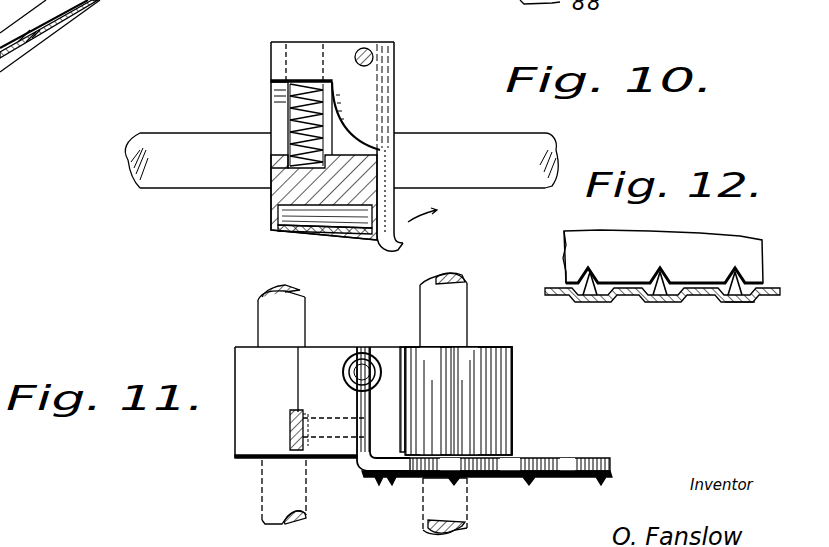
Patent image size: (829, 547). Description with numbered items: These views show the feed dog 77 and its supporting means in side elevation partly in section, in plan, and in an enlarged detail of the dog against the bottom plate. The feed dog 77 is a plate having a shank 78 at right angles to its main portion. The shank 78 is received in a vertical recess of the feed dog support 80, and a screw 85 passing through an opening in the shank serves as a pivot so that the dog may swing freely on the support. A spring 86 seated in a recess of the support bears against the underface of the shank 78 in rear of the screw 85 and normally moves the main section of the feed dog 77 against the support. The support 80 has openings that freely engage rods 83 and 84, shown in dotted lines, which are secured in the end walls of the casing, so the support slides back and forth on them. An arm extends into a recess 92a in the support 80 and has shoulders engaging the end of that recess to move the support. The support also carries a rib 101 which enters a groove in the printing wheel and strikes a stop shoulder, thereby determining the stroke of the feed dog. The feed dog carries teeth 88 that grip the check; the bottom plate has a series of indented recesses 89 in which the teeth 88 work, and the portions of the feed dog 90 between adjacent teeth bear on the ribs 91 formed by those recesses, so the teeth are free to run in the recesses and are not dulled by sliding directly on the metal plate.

In FIG. 10, the feed dog 77 is at (397, 168).
In FIG. 12, the feed dog 77 is at (663, 256).
In FIG. 11, the feed dog 77 is at (552, 466).
In FIG. 10, the shank 78 is at (332, 138).
In FIG. 11, the shank 78 is at (355, 402).
In FIG. 11, the feed dog support 80 is at (313, 365).
In FIG. 11, the rod 83 is at (466, 520).
In FIG. 10, the rod 84 is at (448, 126).
In FIG. 11, the rod 84 is at (268, 503).
In FIG. 10, the screw 85 is at (372, 50).
In FIG. 11, the screw 85 is at (292, 425).
In FIG. 10, the spring 86 is at (284, 96).
In FIG. 11, the spring 86 is at (378, 360).
In FIG. 12, the teeth 88 is at (591, 292).
In FIG. 11, the teeth 88 is at (420, 483).
In FIG. 12, the indented recesses 89 is at (738, 303).
In FIG. 12, the portions of the feed dog between adjacent teeth 90 is at (667, 300).
In FIG. 12, the ribs 91 is at (628, 300).
In FIG. 10, the recess 92a is at (325, 236).
In FIG. 11, the rib 101 is at (488, 418).